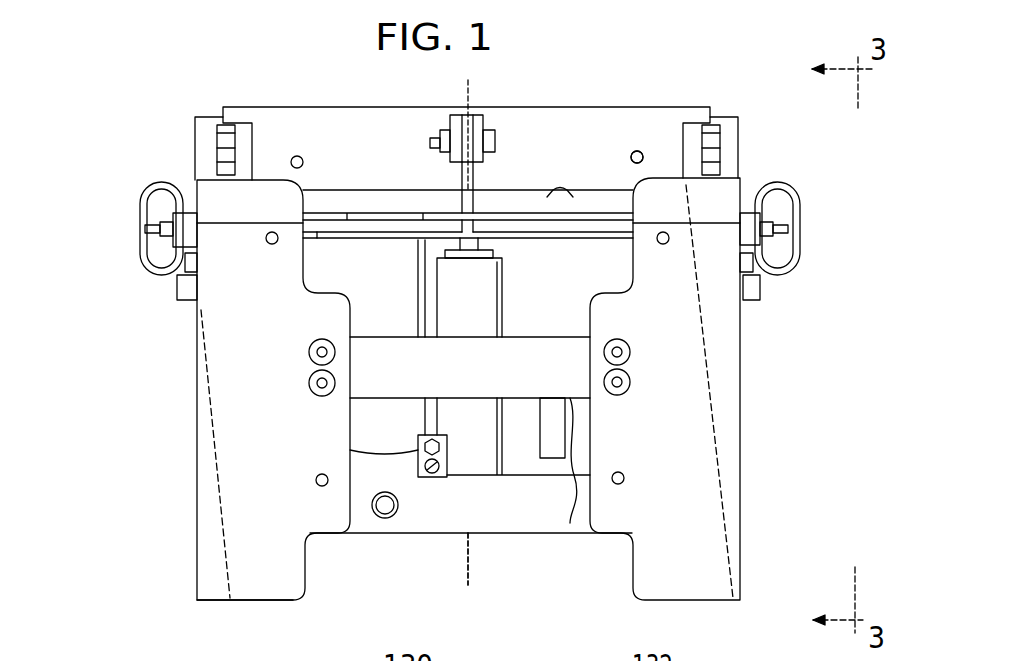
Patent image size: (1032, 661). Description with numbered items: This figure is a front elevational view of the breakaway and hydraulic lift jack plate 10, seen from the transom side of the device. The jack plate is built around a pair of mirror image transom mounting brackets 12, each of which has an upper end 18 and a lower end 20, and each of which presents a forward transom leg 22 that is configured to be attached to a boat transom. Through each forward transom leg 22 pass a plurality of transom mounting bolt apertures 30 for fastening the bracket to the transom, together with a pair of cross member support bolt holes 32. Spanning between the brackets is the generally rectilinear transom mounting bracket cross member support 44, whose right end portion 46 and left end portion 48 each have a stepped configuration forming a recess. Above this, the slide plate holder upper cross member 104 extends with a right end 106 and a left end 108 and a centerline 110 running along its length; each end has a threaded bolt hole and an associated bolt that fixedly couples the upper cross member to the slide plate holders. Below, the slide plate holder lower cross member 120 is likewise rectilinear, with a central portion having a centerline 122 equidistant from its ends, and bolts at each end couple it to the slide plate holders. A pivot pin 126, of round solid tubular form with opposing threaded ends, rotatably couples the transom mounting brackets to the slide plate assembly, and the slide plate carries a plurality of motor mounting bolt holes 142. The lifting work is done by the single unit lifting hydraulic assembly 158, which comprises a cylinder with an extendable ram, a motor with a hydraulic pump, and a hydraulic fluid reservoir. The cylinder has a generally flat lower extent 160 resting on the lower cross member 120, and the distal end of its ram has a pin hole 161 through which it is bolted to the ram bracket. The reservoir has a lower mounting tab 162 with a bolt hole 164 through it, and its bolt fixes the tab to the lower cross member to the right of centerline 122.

The breakaway and hydraulic lift jack plate 10 is at (145, 160).
The transom mounting brackets 12 is at (758, 380).
The upper end 18 is at (207, 198).
The lower end 20 is at (195, 588).
The forward transom leg 22 is at (277, 402).
The transom mounting bolt apertures 30 is at (316, 478).
The cross member support bolt holes 32 is at (307, 343).
The transom mounting bracket cross member support 44 is at (567, 363).
The right end portion 46 is at (392, 359).
The left end portion 48 is at (577, 375).
The slide plate holder upper cross member 104 is at (527, 197).
The right end 106 is at (318, 198).
The left end 108 is at (622, 195).
The centerline 110 is at (487, 192).
The slide plate holder lower cross member 120 is at (513, 507).
The centerline 122 is at (470, 550).
The pivot pin 126 is at (375, 232).
The motor mounting bolt holes 142 is at (643, 157).
The single unit lifting hydraulic assembly 158 is at (397, 288).
The flat lower extent 160 is at (480, 125).
The pin hole 161 is at (460, 177).
The lower mounting tab 162 is at (408, 505).
The bolt hole 164 is at (380, 518).